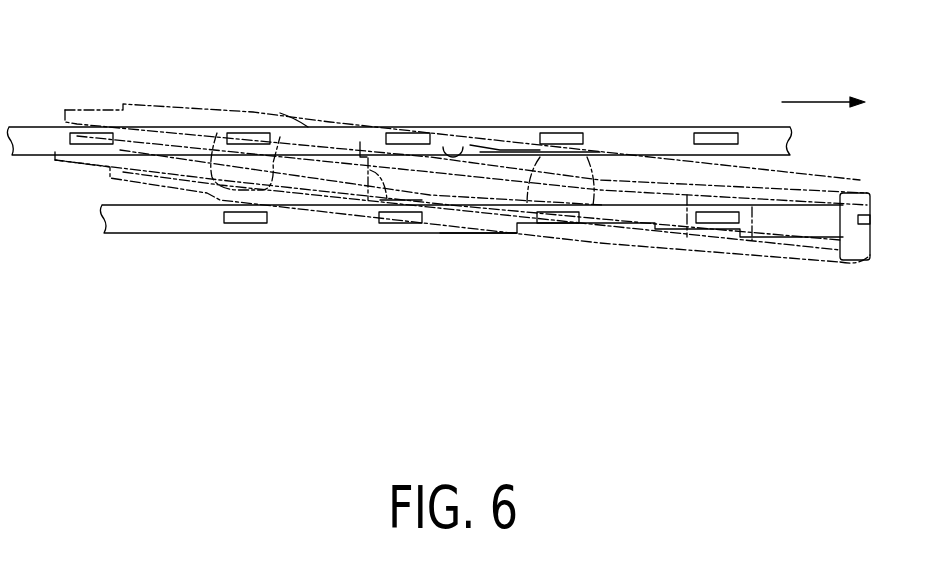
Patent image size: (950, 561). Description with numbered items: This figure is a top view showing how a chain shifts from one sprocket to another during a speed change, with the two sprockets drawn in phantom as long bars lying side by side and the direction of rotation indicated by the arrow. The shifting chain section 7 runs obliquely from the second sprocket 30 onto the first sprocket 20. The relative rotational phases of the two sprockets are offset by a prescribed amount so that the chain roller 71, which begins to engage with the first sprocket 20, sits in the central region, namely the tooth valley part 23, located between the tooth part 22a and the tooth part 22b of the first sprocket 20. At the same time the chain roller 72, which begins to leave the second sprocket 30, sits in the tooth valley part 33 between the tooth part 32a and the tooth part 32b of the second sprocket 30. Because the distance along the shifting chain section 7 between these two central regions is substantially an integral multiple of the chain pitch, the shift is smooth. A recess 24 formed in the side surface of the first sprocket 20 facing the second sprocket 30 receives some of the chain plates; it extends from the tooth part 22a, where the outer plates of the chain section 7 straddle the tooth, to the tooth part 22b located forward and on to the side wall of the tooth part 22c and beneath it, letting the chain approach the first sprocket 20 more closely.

The first sprocket 20 is at (25, 116).
The second sprocket 30 is at (131, 246).
The tooth part 22a is at (248, 136).
The tooth part 22b is at (407, 133).
The tooth part 22c is at (568, 135).
The tooth valley part 23 is at (341, 131).
The recess 24 is at (464, 146).
The chain roller 72 is at (595, 152).
The chain roller 71 is at (390, 212).
The shifting chain section 7 is at (474, 245).
The tooth part 32a is at (556, 218).
The tooth part 32b is at (720, 220).
The tooth valley part 33 is at (643, 210).